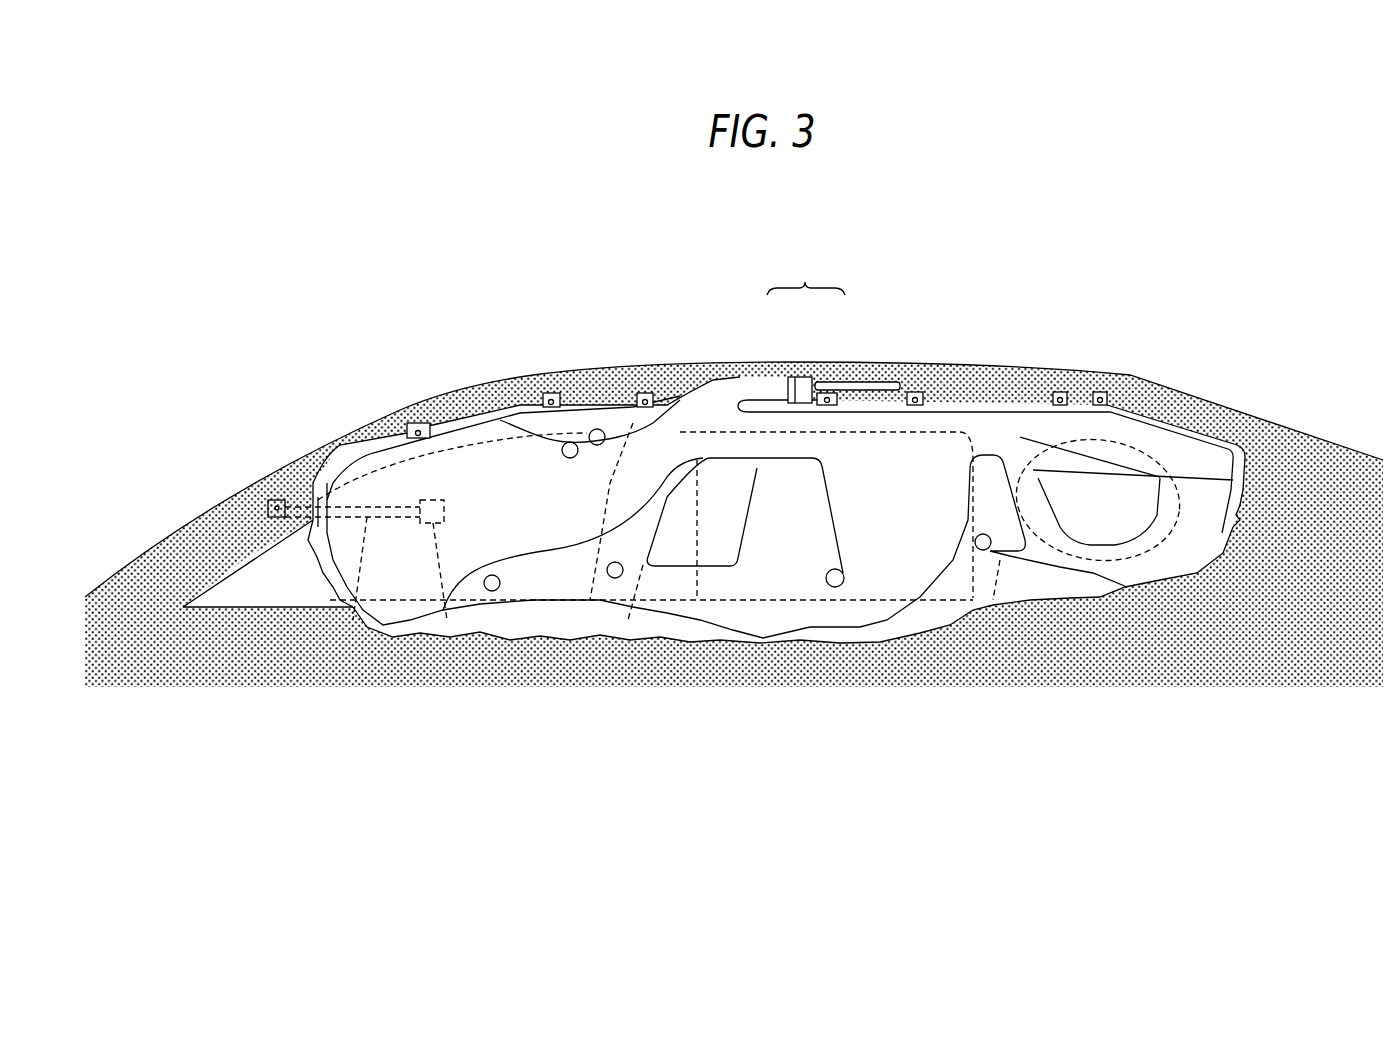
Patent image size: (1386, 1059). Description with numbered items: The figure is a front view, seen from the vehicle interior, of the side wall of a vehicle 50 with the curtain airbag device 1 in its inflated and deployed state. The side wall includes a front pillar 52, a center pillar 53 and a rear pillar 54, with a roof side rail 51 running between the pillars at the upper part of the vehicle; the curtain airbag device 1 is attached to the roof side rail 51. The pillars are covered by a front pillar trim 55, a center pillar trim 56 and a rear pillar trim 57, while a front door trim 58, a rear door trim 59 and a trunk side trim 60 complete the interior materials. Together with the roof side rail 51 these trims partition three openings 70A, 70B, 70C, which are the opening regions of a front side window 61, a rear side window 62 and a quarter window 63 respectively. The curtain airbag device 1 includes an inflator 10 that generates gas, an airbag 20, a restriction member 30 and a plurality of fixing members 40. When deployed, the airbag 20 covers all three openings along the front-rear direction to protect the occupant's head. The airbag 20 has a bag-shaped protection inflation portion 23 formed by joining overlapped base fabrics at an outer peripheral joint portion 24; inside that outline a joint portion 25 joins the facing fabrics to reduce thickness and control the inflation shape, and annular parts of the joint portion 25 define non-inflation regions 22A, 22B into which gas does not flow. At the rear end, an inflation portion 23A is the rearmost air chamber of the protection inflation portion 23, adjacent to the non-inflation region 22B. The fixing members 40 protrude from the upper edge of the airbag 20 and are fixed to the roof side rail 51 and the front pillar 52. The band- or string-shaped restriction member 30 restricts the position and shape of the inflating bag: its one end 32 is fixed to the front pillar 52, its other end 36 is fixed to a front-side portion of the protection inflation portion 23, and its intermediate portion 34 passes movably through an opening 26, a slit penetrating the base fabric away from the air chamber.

The curtain airbag device 1 is at (806, 271).
The inflator 10 is at (850, 387).
The airbag 20 is at (762, 388).
The non-inflation region 22A is at (727, 532).
The non-inflation region 22B is at (1124, 522).
The protection inflation portion 23 is at (913, 487).
The inflation portion 23A is at (1190, 447).
The outer peripheral joint portion 24 is at (1003, 413).
The joint portion 25 is at (518, 415).
The opening 26 is at (340, 530).
The restriction member 30 is at (297, 507).
The one end 32 is at (270, 500).
The intermediate portion 34 is at (340, 605).
The other end 36 is at (450, 612).
The fixing member 40 is at (412, 422).
The vehicle 50 is at (1137, 373).
The roof side rail 51 is at (703, 395).
The front pillar 52 is at (327, 460).
The center pillar 53 is at (593, 582).
The rear pillar 54 is at (975, 567).
The front pillar trim 55 is at (373, 437).
The center pillar trim 56 is at (638, 600).
The rear pillar trim 57 is at (990, 555).
The front door trim 58 is at (370, 660).
The rear door trim 59 is at (857, 657).
The trunk side trim 60 is at (1187, 590).
The front side window 61 is at (397, 637).
The rear side window 62 is at (773, 595).
The quarter window 63 is at (1107, 560).
The opening 70A is at (485, 520).
The opening 70B is at (788, 520).
The opening 70C is at (1116, 538).